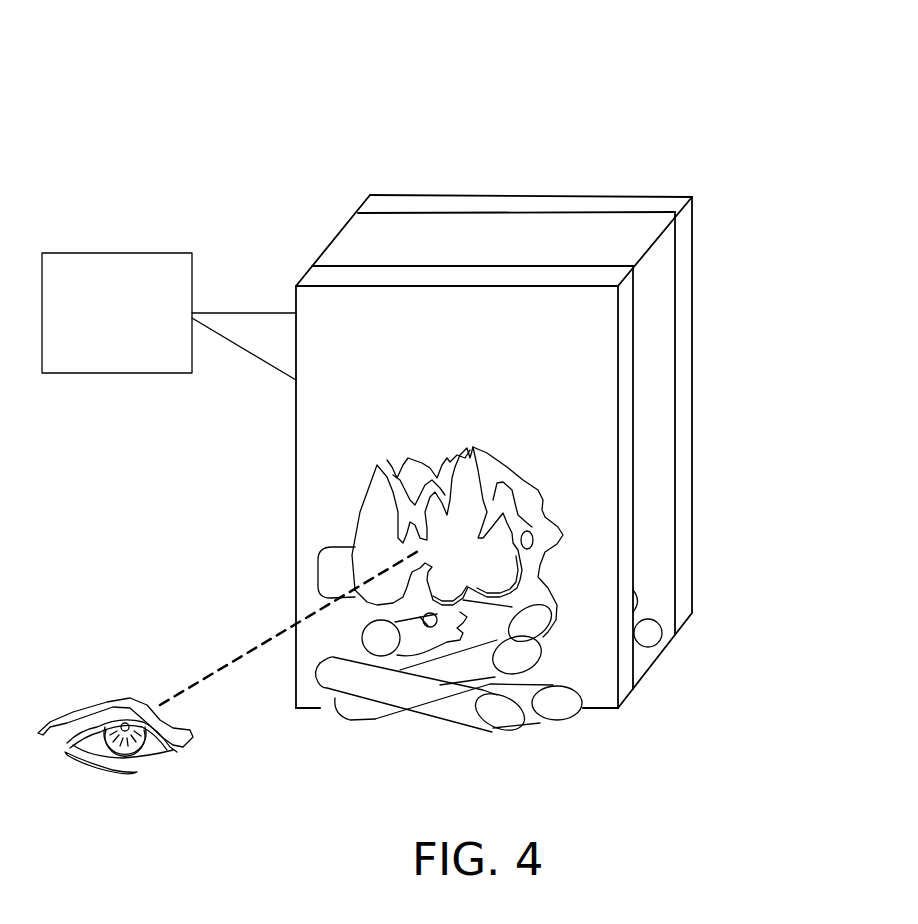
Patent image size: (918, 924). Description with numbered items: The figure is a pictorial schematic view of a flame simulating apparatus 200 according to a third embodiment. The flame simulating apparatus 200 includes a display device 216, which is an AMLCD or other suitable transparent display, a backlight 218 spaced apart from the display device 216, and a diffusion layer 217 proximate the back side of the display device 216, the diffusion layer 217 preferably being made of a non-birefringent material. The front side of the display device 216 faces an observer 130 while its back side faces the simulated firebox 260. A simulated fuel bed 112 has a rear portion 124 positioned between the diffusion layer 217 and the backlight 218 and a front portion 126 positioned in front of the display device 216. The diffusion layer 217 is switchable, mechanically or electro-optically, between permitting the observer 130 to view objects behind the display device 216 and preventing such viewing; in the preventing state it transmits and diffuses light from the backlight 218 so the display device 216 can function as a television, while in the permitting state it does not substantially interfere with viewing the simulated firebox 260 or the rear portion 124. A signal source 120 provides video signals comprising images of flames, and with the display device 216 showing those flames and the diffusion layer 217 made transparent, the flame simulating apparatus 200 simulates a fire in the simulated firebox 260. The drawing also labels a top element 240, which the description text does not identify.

The flame simulating apparatus 200 is at (718, 106).
The simulated fuel bed 112 is at (644, 708).
The signal source 120 is at (169, 316).
The rear portion of simulated fuel bed 124 is at (643, 630).
The front portion of simulated fuel bed 126 is at (415, 690).
The observer 130 is at (98, 742).
The display device 216 is at (327, 412).
The diffusion layer 217 is at (635, 495).
The backlight 218 is at (683, 265).
The top panel 240 is at (477, 242).
The simulated firebox 260 is at (650, 437).